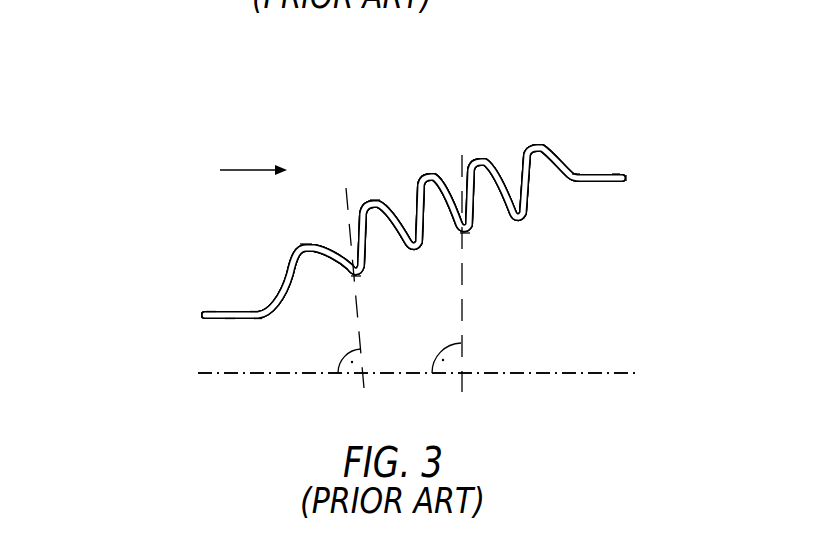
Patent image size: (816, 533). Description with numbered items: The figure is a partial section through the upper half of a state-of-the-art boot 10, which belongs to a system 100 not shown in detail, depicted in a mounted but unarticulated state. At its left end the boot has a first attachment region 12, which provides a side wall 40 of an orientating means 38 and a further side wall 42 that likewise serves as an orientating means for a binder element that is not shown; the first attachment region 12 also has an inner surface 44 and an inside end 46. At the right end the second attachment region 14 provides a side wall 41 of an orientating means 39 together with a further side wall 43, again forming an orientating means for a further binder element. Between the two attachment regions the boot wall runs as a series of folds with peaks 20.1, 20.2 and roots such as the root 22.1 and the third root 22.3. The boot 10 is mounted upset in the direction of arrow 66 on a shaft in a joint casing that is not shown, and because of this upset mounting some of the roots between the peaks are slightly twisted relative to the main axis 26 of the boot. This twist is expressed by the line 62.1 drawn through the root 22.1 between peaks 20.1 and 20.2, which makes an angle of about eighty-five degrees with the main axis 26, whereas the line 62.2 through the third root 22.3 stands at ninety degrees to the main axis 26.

The boot 10 is at (575, 62).
The system 100 is at (413, 231).
The first attachment region 12 is at (214, 252).
The second attachment region 14 is at (611, 138).
The peak 20.1 is at (302, 242).
The peak 20.2 is at (370, 198).
The root 22.1 is at (374, 273).
The third root 22.3 is at (474, 239).
The main axis 26 is at (208, 373).
The orientating means 38 is at (193, 311).
The orientating means 39 is at (636, 177).
The side wall 40 is at (214, 298).
The side wall 41 is at (619, 163).
The side wall 42 is at (253, 298).
The side wall 43 is at (578, 166).
The inner surface 44 is at (228, 333).
The inside end 46 is at (260, 332).
The line 62.1 is at (363, 305).
The line 62.2 is at (462, 286).
The arrow 66 is at (240, 166).